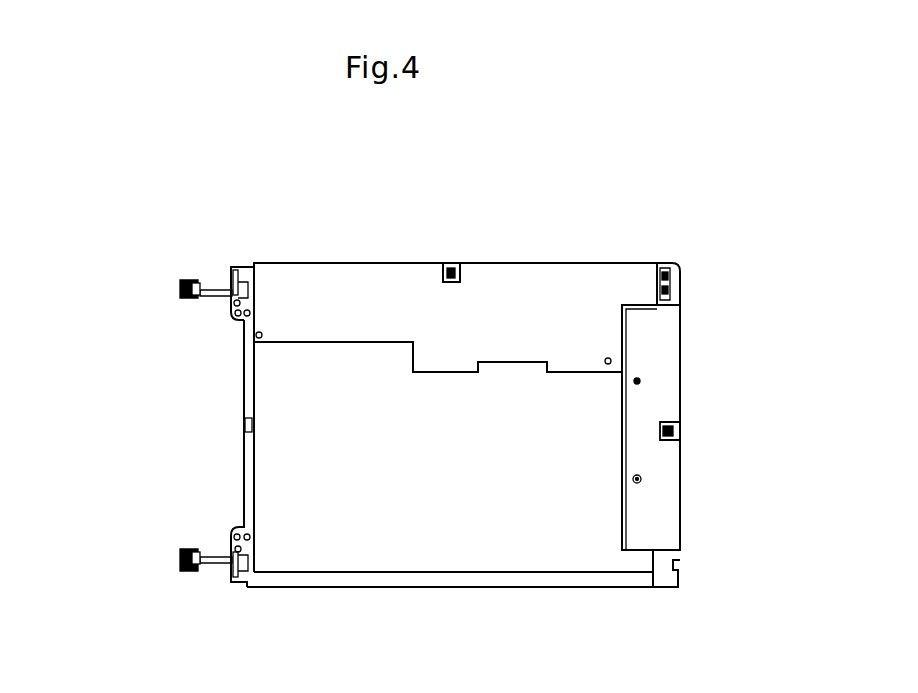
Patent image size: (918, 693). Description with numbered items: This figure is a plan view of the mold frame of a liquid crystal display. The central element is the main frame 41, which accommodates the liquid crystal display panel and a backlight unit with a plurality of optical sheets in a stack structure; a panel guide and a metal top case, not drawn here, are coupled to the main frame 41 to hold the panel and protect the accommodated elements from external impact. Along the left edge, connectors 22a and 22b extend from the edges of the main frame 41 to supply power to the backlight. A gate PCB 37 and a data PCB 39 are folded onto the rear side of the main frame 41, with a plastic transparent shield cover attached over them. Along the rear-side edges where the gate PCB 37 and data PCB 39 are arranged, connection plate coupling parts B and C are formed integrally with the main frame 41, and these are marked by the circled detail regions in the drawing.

The connector 22a is at (182, 285).
The connector 22b is at (182, 561).
The gate PCB 37 is at (665, 388).
The data PCB 39 is at (325, 276).
The main frame 41 is at (573, 560).
The connection plate coupling part B is at (702, 254).
The connection plate coupling part C is at (482, 236).